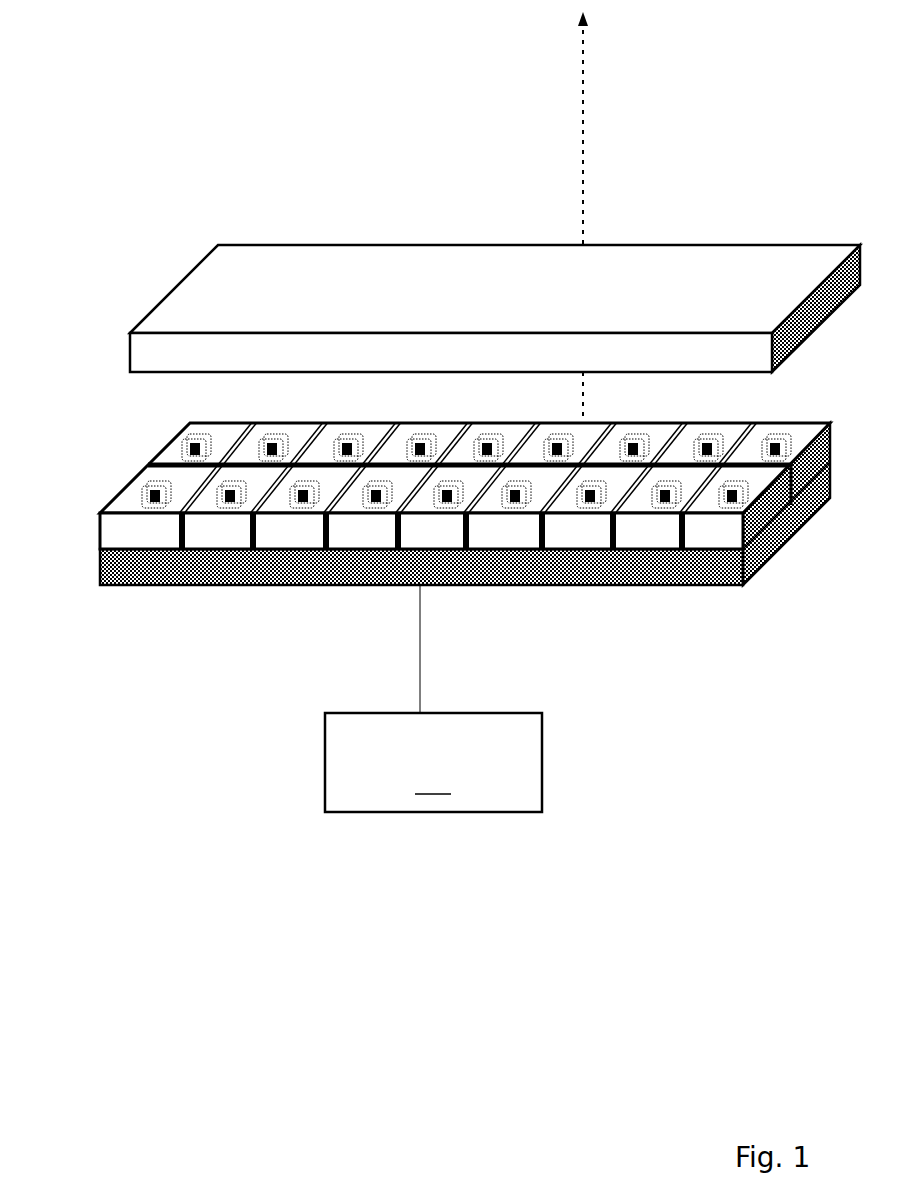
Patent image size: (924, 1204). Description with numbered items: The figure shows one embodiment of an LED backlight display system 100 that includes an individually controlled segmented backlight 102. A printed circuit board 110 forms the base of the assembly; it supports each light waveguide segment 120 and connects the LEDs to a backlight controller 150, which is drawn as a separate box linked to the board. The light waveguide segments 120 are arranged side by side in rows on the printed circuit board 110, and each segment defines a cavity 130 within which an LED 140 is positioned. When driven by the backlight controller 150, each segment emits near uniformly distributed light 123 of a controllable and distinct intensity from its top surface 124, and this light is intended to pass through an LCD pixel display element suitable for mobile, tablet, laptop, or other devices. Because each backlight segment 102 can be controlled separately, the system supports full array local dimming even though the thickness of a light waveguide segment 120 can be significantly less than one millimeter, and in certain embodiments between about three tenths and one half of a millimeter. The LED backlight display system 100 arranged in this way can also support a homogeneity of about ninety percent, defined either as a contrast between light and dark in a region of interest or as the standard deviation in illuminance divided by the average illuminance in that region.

The LED backlight display system 100 is at (147, 133).
The individually controlled segmented backlight 102 is at (90, 482).
The printed circuit board 110 is at (320, 586).
The light waveguide segment 120 is at (768, 507).
The near uniformly distributed light 123 is at (583, 67).
The top surface 124 is at (232, 434).
The cavity 130 is at (143, 488).
The LED 140 is at (665, 497).
The backlight controller 150 is at (368, 275).